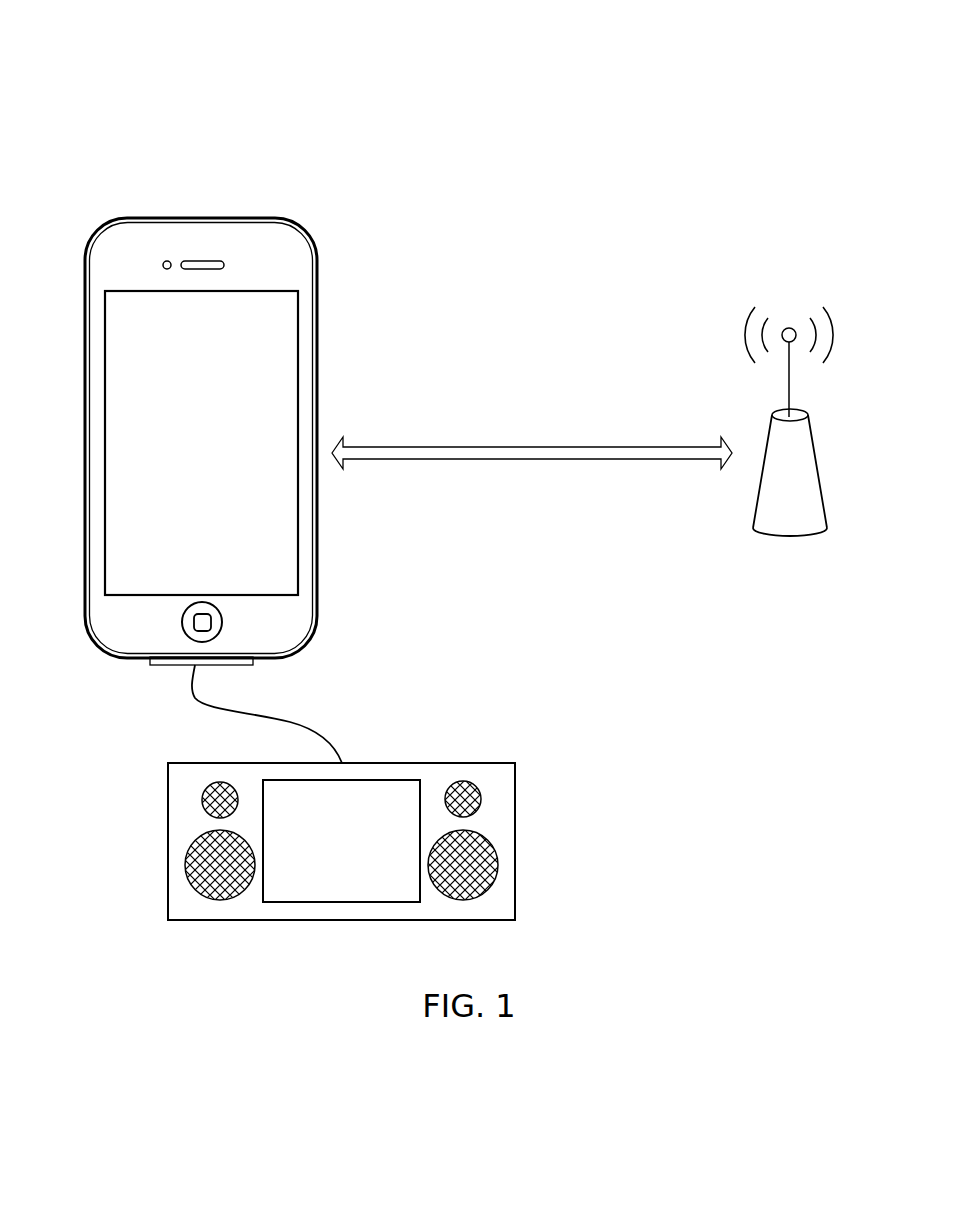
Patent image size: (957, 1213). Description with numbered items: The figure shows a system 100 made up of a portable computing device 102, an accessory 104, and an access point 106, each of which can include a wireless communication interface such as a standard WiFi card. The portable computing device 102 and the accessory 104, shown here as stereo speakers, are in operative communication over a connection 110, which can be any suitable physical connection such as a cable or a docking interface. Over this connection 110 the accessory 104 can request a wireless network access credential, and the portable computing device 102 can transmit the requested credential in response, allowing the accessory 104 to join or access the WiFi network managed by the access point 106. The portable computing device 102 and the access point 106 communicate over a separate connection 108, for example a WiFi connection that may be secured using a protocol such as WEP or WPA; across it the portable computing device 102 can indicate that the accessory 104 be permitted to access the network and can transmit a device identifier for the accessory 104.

The system 100 is at (442, 65).
The portable computing device 102 is at (320, 397).
The accessory 104 is at (168, 832).
The access point 106 is at (772, 422).
The connection 108 is at (500, 447).
The connection 110 is at (320, 728).